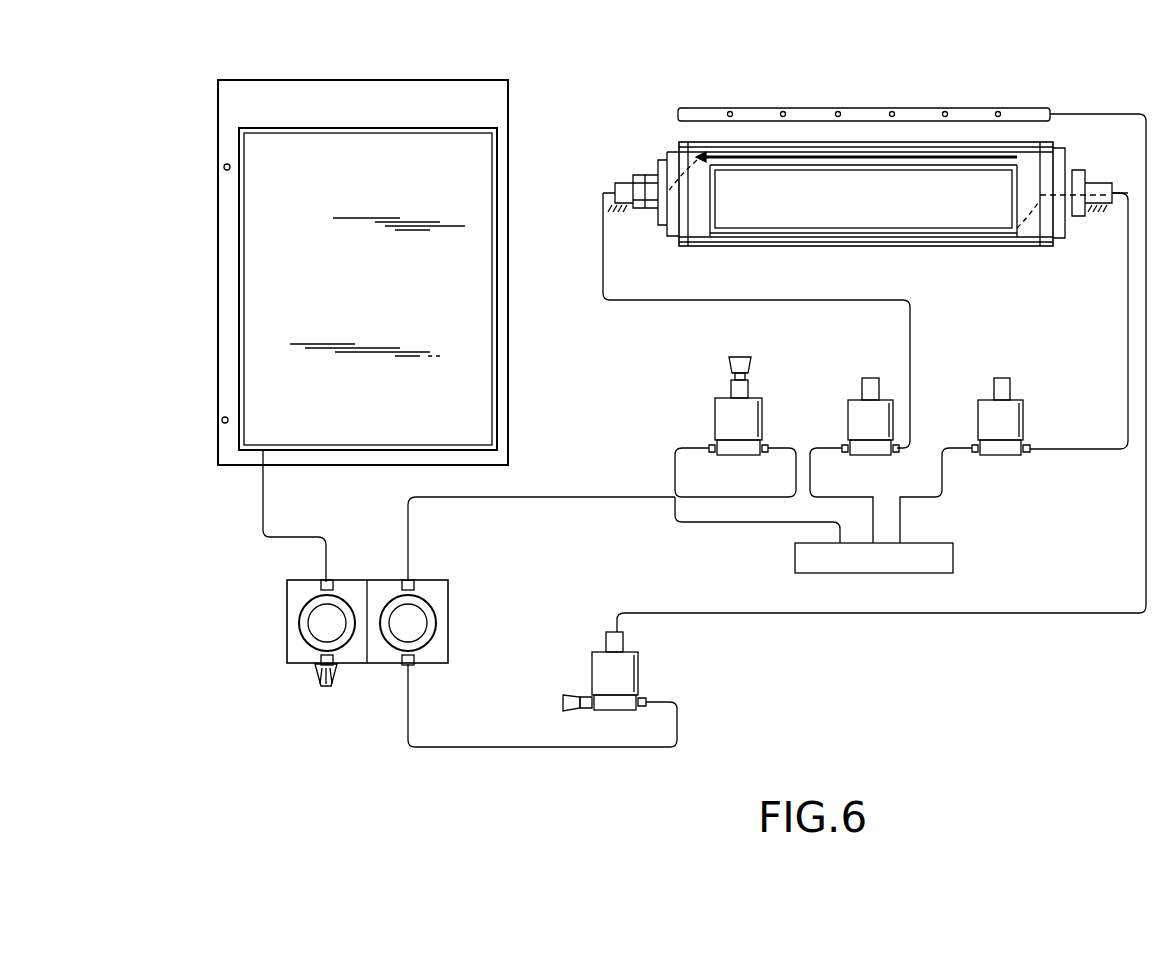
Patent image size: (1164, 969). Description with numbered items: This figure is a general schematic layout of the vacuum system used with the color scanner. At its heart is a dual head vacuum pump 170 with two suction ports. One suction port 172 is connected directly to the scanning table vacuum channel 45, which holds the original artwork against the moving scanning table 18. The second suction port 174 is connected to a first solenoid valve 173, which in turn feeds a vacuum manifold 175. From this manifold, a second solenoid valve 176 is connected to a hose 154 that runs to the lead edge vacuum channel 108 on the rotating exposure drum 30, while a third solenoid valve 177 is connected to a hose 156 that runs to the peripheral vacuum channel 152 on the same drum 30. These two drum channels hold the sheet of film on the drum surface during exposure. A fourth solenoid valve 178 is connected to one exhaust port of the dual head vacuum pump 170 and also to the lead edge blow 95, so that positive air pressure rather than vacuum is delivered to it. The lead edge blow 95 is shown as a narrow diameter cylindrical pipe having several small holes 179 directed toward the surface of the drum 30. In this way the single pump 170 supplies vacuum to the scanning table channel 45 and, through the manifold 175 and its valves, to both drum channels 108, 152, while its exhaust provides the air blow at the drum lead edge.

The scanning table 18 is at (183, 296).
The scanning table vacuum channel 45 is at (245, 385).
The exposure drum 30 is at (820, 248).
The lead edge blow 95 is at (1040, 112).
The lead edge vacuum channel 108 is at (968, 153).
The peripheral vacuum channel 152 is at (1017, 230).
The hose 154 is at (603, 265).
The hose 156 is at (1128, 283).
The dual head vacuum pump 170 is at (372, 607).
The suction port 172 is at (318, 582).
The first solenoid valve 173 is at (715, 412).
The second suction port 174 is at (415, 582).
The vacuum manifold 175 is at (925, 574).
The second solenoid valve 176 is at (848, 412).
The third solenoid valve 177 is at (1023, 412).
The fourth solenoid valve 178 is at (640, 672).
The small holes 179 is at (735, 106).